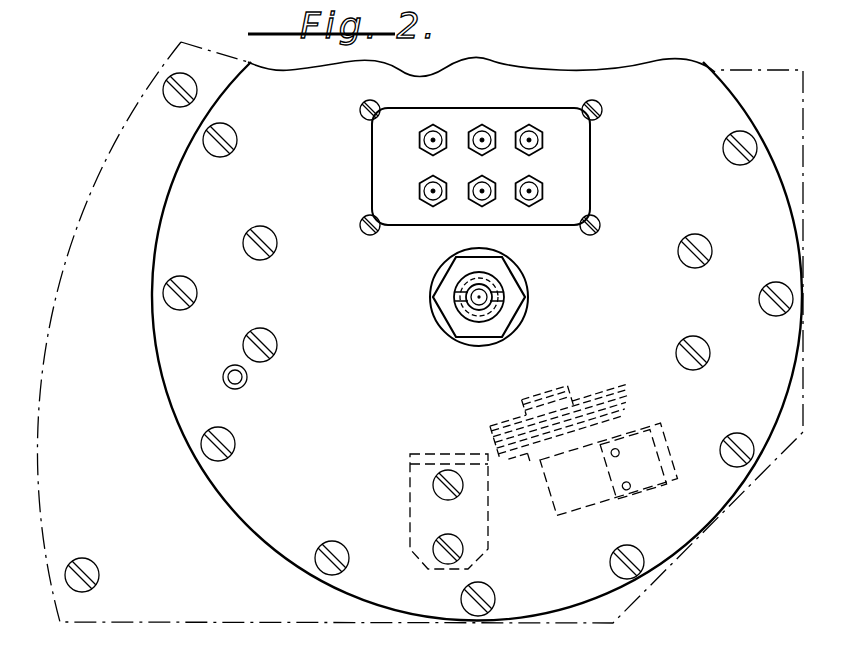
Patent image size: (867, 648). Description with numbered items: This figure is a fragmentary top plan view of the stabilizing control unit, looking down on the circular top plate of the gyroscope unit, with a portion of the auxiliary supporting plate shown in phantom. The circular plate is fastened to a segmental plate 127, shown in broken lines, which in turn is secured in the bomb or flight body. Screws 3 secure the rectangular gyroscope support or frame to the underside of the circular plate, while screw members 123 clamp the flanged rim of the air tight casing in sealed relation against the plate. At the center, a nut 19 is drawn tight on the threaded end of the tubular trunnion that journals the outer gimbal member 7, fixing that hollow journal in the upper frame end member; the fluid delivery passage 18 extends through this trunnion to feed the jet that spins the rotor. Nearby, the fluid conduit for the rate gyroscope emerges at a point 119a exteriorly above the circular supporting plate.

The screws 3 is at (272, 241).
The outer gimbal member 7 is at (665, 70).
The fluid delivery passage 18 is at (470, 305).
The nut 19 is at (498, 313).
The point 119a is at (245, 383).
The screw members 123 is at (228, 137).
The segmental plate 127 is at (110, 150).